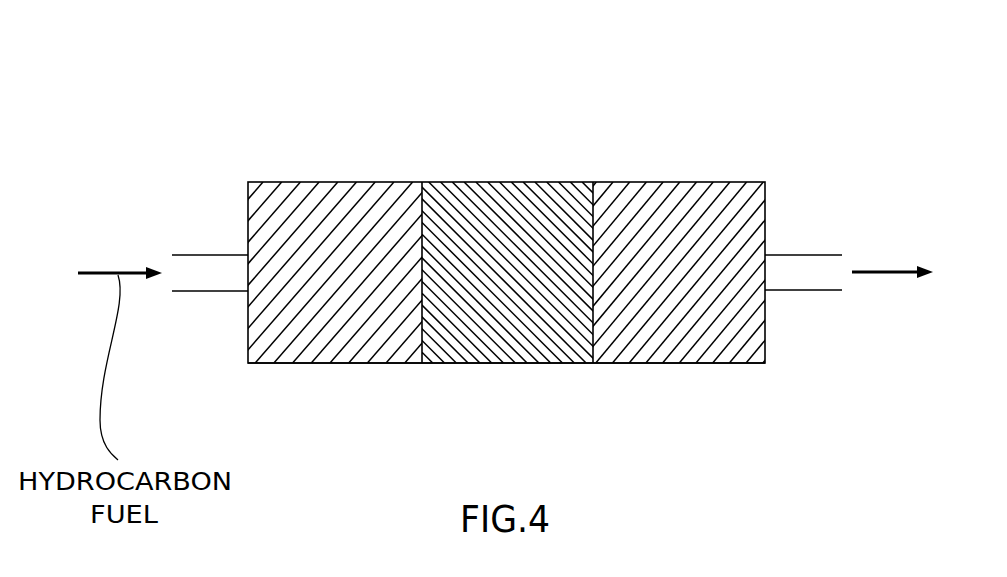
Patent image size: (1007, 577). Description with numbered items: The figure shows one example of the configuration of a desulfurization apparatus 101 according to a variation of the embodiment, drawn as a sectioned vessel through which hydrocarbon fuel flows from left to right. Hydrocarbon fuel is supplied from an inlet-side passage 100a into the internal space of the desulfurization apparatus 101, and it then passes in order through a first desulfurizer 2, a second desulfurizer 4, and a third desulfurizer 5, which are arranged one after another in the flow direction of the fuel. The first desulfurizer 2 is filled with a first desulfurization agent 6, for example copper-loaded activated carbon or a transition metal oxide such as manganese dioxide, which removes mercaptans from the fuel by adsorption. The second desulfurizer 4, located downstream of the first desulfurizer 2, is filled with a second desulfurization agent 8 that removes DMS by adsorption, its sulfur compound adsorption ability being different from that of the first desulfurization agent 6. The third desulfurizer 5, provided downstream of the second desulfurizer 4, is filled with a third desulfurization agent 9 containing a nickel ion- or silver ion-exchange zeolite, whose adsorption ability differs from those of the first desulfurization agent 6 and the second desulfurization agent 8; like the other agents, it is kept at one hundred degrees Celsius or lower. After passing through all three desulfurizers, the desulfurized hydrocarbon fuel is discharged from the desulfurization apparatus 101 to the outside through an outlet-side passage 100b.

The desulfurization apparatus 101 is at (437, 145).
The first desulfurizer 2 is at (330, 182).
The second desulfurizer 4 is at (532, 182).
The third desulfurizer 5 is at (703, 182).
The first desulfurization agent 6 is at (332, 343).
The second desulfurization agent 8 is at (530, 343).
The third desulfurization agent 9 is at (702, 343).
The inlet-side passage 100a is at (213, 291).
The outlet-side passage 100b is at (800, 290).